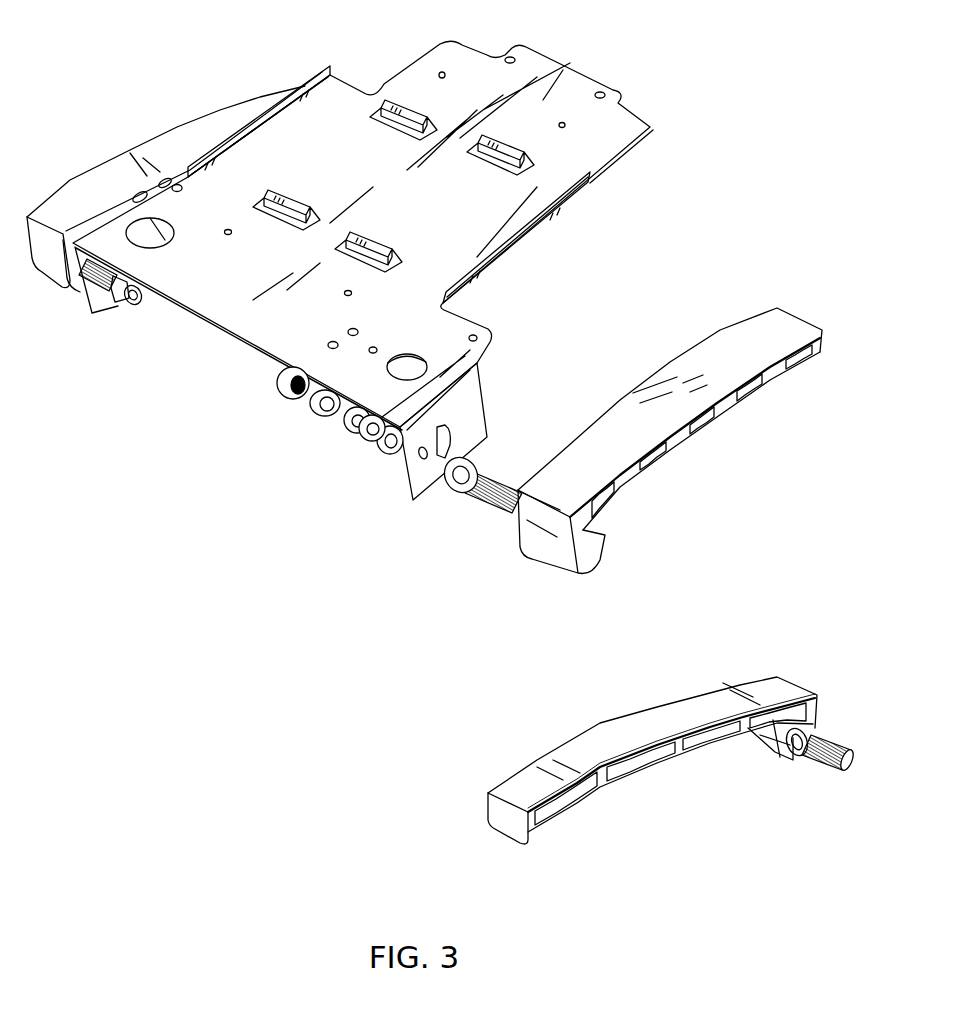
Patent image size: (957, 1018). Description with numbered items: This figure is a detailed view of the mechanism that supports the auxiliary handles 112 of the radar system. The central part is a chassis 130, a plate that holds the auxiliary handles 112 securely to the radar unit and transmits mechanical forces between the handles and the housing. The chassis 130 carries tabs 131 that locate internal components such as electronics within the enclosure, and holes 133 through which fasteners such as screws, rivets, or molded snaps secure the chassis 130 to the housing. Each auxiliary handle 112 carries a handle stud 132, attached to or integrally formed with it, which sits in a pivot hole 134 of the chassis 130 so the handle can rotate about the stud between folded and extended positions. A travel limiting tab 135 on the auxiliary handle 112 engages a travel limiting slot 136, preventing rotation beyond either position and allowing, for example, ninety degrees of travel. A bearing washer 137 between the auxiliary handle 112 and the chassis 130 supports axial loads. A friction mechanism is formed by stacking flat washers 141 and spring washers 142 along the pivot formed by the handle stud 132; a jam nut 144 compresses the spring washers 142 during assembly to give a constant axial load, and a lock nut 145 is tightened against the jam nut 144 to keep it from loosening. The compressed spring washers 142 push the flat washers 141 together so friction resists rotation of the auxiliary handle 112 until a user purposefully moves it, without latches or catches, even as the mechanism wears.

The auxiliary handle 112 is at (148, 150).
The chassis 130 is at (440, 223).
The tab 131 is at (330, 72).
The handle stud 132 is at (136, 303).
The hole 133 is at (511, 56).
The pivot hole 134 is at (417, 498).
The travel limiting tab 135 is at (793, 762).
The travel limiting slot 136 is at (438, 500).
The bearing washer 137 is at (473, 463).
The flat washer 141 is at (348, 428).
The spring washer 142 is at (370, 450).
The jam nut 144 is at (310, 412).
The lock nut 145 is at (283, 395).